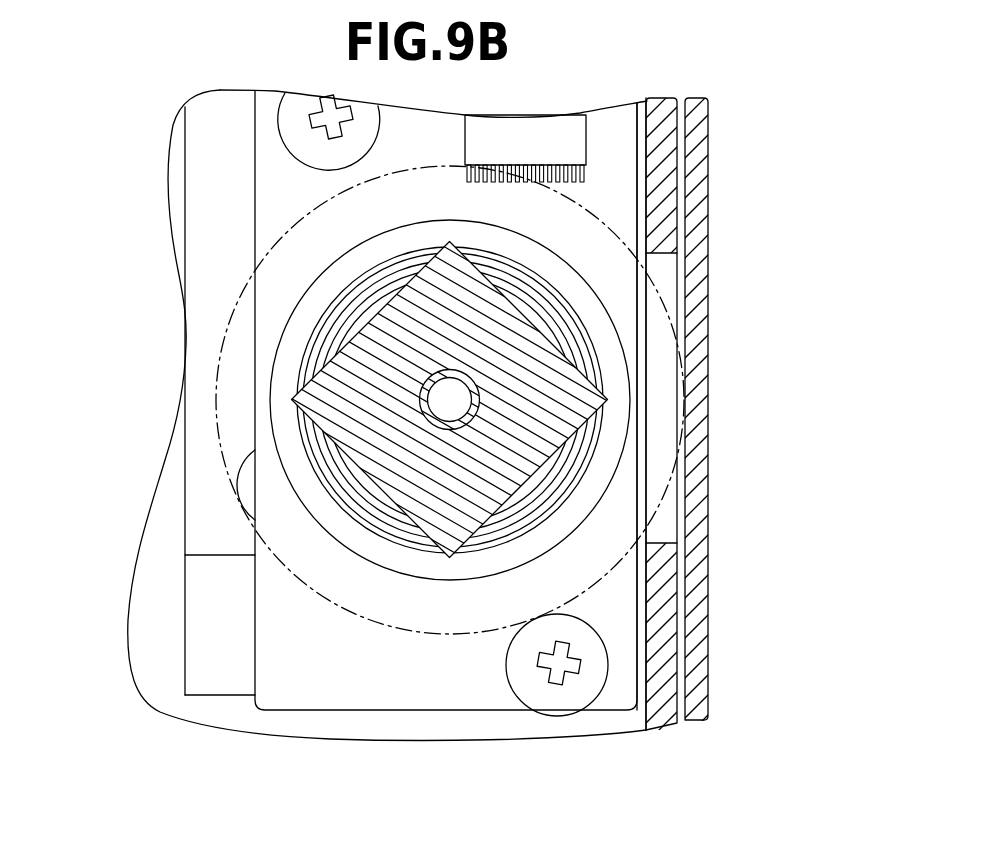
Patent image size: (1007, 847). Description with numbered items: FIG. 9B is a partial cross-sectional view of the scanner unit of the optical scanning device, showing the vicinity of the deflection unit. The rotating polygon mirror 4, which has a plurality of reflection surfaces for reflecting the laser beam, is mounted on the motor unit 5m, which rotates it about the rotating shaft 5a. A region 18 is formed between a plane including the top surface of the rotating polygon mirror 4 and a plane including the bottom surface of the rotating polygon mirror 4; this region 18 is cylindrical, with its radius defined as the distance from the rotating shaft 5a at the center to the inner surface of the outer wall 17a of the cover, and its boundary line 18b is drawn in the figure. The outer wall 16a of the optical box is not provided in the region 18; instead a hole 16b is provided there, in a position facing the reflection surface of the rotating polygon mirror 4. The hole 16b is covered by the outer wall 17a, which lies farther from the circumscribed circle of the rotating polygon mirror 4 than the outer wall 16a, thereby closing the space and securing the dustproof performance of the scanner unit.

The rotating polygon mirror 4 is at (372, 355).
The rotating shaft 5a is at (445, 407).
The motor unit 5m is at (358, 497).
The outer wall 16a is at (662, 121).
The hole 16b is at (663, 277).
The outer wall 17a is at (700, 402).
The region 18 is at (615, 520).
The boundary line 18b is at (600, 582).